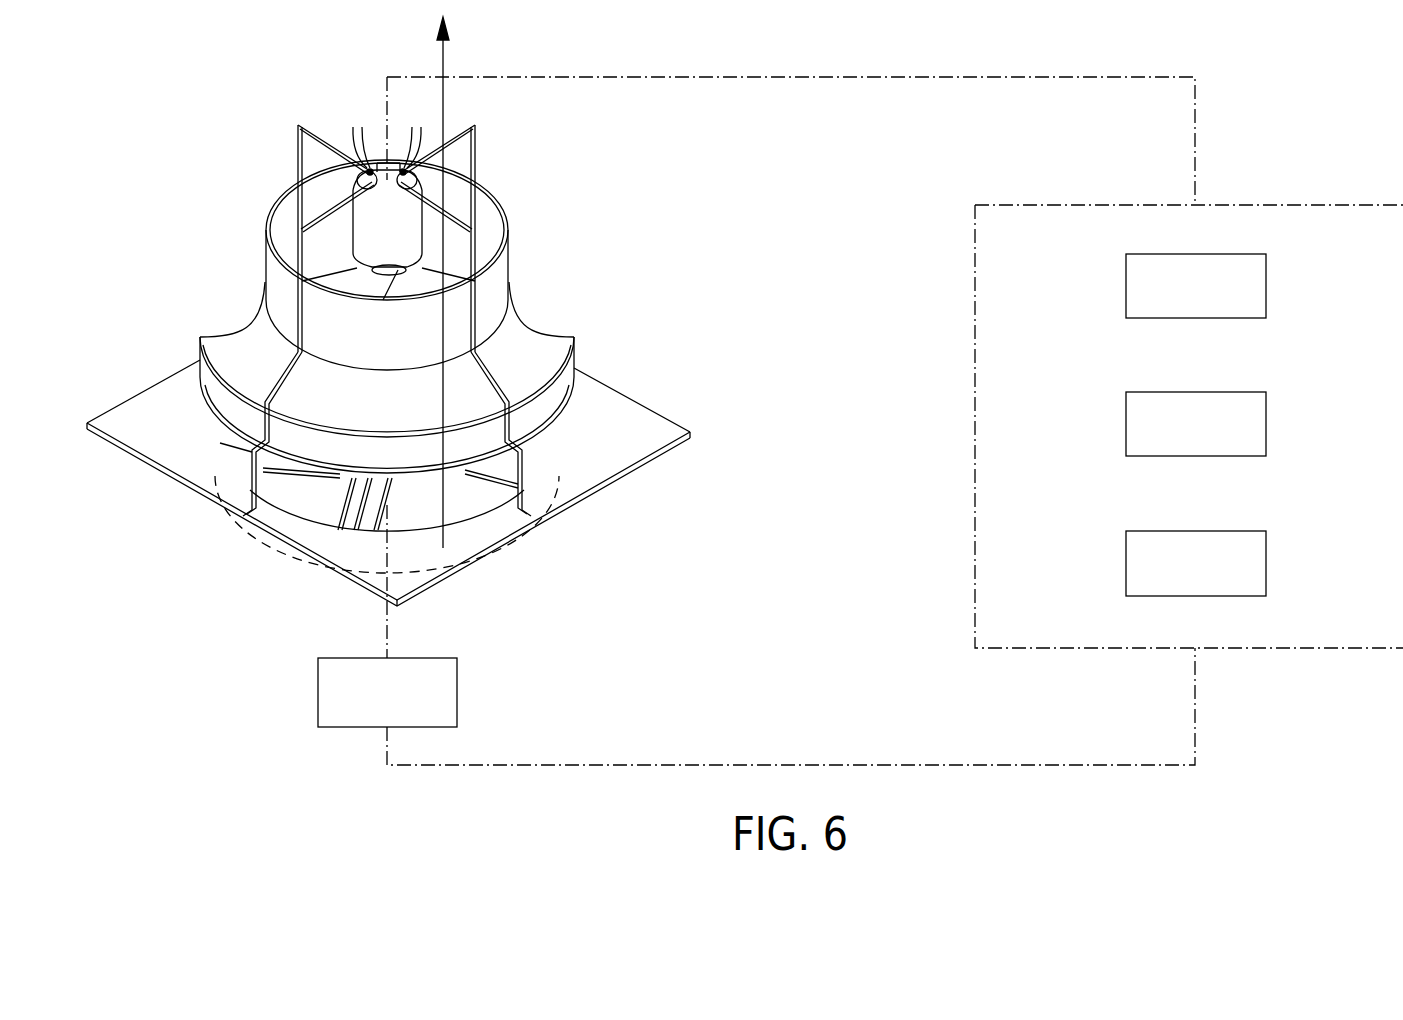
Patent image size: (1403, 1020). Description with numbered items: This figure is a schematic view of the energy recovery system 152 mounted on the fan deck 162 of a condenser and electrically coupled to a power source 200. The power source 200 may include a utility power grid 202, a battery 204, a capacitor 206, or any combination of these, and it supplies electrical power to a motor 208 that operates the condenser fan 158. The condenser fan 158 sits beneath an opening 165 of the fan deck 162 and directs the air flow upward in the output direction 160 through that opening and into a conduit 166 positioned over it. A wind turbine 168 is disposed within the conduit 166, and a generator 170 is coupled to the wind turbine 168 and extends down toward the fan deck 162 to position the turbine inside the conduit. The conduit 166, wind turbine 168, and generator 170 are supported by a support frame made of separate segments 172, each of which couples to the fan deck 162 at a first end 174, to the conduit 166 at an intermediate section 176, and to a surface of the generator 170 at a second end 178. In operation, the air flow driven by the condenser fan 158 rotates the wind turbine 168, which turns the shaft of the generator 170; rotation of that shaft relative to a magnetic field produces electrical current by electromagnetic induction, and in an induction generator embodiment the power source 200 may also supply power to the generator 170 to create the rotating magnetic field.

The energy recovery system 152 is at (572, 217).
The condenser fan 158 is at (353, 527).
The output direction 160 is at (447, 56).
The fan deck 162 is at (127, 428).
The opening 165 is at (478, 518).
The conduit 166 is at (532, 360).
The wind turbine 168 is at (457, 252).
The generator 170 is at (388, 240).
The segment 172 is at (318, 135).
The first end 174 is at (237, 518).
The intermediate section 176 is at (522, 328).
The second end 178 is at (361, 136).
The power source 200 is at (1310, 204).
The utility power grid 202 is at (1232, 254).
The battery 204 is at (1232, 392).
The capacitor 206 is at (1232, 531).
The motor 208 is at (430, 657).